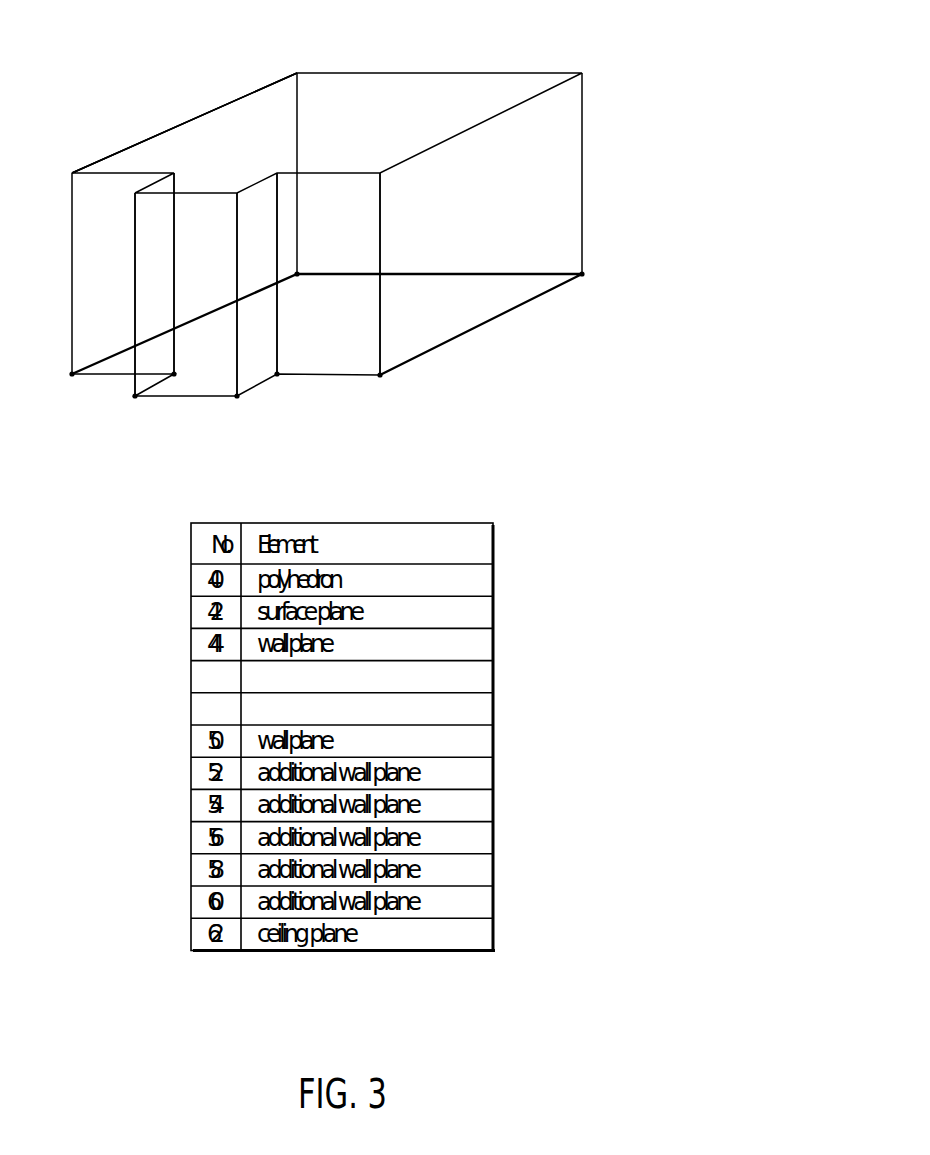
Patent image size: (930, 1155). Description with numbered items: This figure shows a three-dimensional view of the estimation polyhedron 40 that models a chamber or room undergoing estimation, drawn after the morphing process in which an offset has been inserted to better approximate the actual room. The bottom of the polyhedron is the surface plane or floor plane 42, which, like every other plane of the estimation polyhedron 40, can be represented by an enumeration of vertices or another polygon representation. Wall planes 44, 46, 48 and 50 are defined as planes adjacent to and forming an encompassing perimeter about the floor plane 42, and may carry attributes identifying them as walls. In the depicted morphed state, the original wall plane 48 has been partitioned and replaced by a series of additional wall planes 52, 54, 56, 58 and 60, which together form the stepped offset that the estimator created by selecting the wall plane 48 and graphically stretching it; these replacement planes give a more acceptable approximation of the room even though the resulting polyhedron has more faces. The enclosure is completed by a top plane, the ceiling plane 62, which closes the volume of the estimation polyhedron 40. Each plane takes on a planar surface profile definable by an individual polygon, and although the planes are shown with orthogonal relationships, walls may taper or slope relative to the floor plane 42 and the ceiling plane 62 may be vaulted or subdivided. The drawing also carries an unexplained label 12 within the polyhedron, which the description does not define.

The space 12 is at (225, 169).
The estimation polyhedron 40 is at (609, 173).
The surface plane 42 is at (225, 374).
The wall plane 44 is at (410, 123).
The wall plane 46 is at (271, 677).
The wall plane 48 is at (271, 709).
The wall plane 50 is at (510, 216).
The additional wall plane 52 is at (113, 238).
The additional wall plane 54 is at (163, 260).
The additional wall plane 56 is at (205, 271).
The additional wall plane 58 is at (265, 250).
The additional wall plane 60 is at (347, 253).
The ceiling plane 62 is at (447, 93).